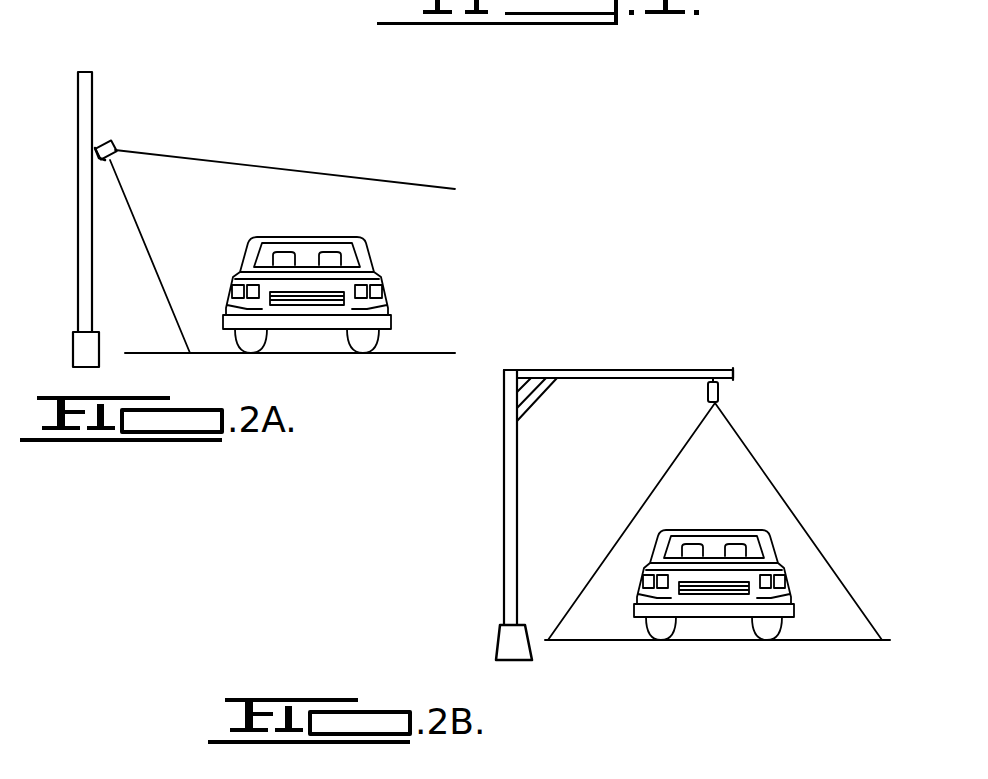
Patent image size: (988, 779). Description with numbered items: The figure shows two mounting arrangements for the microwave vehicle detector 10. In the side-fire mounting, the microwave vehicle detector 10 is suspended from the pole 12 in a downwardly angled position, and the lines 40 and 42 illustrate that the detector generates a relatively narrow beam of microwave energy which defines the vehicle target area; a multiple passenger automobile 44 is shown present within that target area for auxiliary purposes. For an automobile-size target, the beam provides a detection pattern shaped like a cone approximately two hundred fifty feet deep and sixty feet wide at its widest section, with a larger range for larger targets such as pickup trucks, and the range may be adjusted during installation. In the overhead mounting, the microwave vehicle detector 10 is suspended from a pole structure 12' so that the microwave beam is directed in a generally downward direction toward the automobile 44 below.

In FIG. 2A, the microwave vehicle detector 10 is at (108, 142).
In FIG. 2B, the microwave vehicle detector 10 is at (720, 393).
In FIG. 2A, the pole 12 is at (110, 190).
In FIG. 2B, the pole structure 12' is at (568, 514).
In FIG. 2A, the line 40 is at (320, 172).
In FIG. 2A, the line 42 is at (155, 259).
In FIG. 2A, the multiple passenger automobile 44 is at (364, 257).
In FIG. 2B, the multiple passenger automobile 44 is at (702, 530).